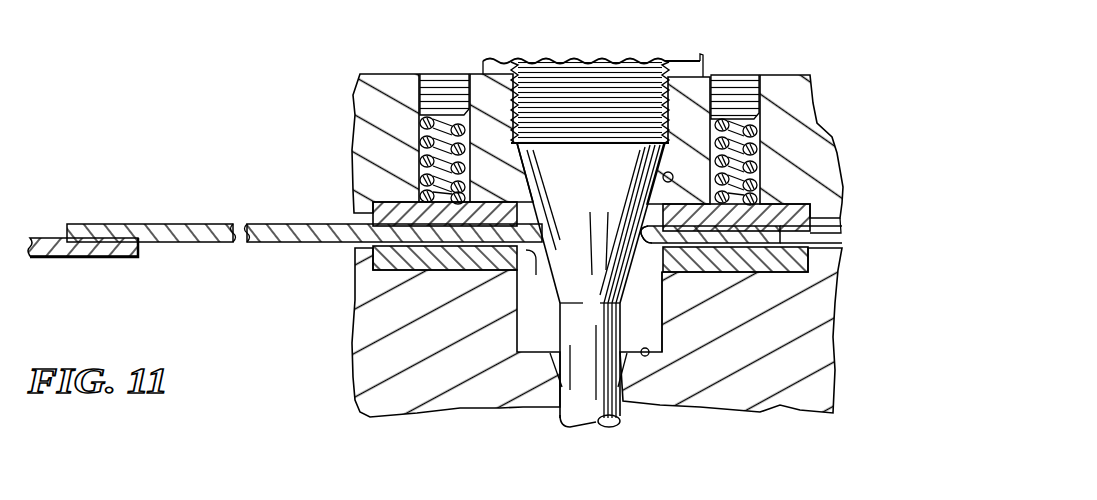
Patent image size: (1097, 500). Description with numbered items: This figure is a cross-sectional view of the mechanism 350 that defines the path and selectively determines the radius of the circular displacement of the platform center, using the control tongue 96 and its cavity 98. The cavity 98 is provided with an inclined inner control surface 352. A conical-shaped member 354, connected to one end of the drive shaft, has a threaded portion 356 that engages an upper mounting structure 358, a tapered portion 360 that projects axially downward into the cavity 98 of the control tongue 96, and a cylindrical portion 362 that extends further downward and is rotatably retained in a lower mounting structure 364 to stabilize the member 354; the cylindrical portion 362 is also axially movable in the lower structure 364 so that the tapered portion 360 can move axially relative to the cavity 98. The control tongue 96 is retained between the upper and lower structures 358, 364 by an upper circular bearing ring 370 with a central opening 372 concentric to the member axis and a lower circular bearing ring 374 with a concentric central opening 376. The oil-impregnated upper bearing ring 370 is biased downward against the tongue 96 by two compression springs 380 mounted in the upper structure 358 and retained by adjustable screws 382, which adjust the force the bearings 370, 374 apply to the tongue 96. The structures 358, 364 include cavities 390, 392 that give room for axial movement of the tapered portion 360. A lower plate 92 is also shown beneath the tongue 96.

The mechanism 350 is at (740, 68).
The inclined inner control surface 352 is at (660, 250).
The conical-shaped member 354 is at (503, 115).
The threaded portion 356 is at (643, 72).
The upper mounting structure 358 is at (798, 108).
The tapered portion 360 is at (628, 258).
The cylindrical portion 362 is at (574, 390).
The lower mounting structure 364 is at (818, 358).
The upper circular bearing ring 370 is at (373, 205).
The central opening 372 is at (521, 223).
The lower circular bearing ring 374 is at (372, 265).
The central opening 376 is at (532, 284).
The compression springs 380 is at (425, 143).
The adjustable screws 382 is at (442, 95).
The cavity 390 is at (645, 358).
The cavity 392 is at (673, 172).
The control tongue 96 is at (208, 223).
The lower plate 92 is at (97, 258).
The cavity 98 is at (650, 244).